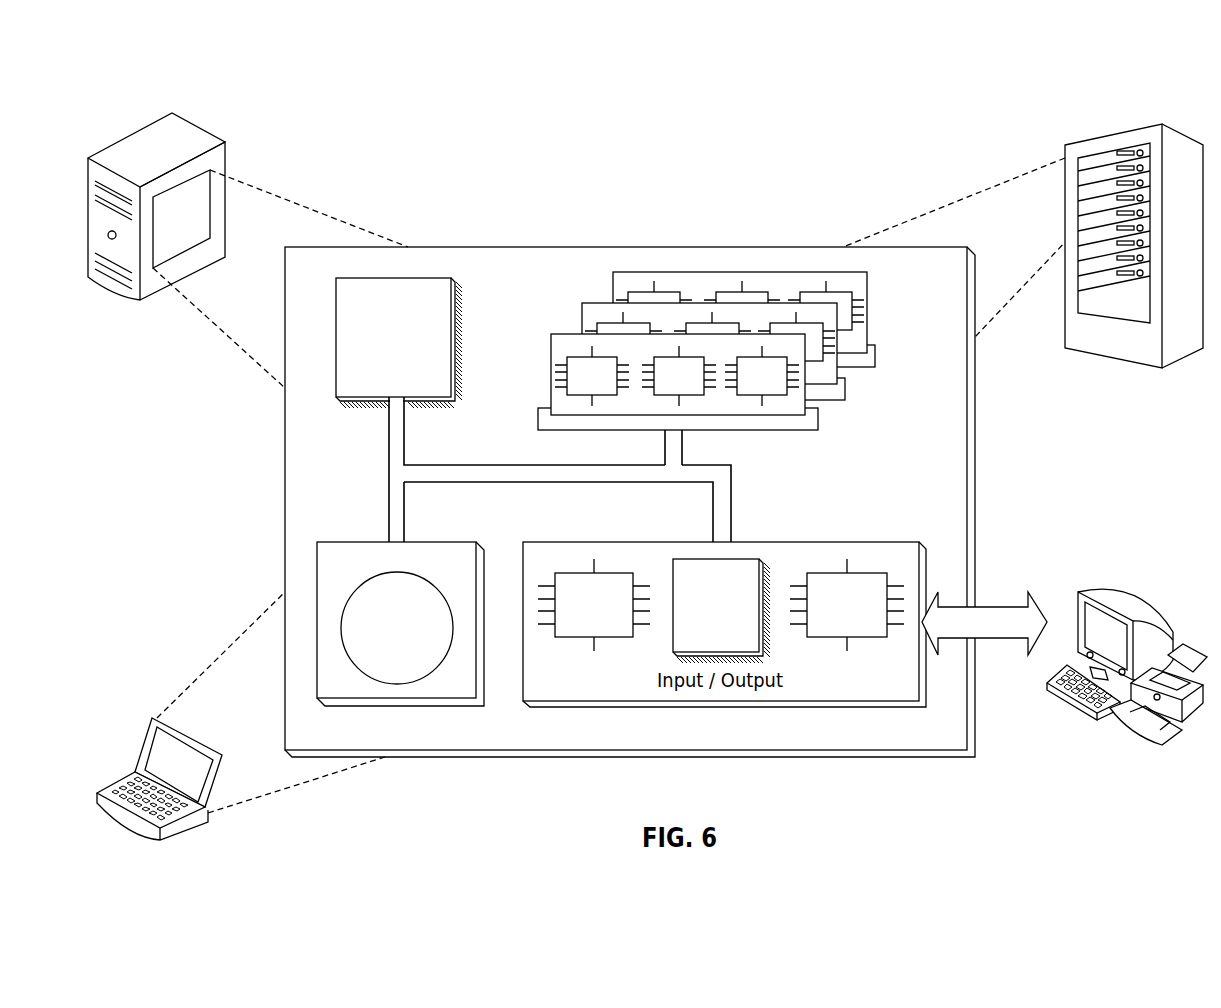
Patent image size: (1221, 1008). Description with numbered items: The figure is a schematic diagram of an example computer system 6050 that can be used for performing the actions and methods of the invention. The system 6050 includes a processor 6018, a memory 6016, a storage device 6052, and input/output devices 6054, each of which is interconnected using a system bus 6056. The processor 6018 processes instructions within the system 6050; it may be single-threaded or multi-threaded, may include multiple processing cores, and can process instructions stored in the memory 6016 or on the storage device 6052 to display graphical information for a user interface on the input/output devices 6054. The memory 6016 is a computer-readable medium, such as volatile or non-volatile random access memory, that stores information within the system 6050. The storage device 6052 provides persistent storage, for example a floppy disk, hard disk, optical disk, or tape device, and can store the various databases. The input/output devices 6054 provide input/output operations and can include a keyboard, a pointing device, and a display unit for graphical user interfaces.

The computer system 6050 is at (183, 90).
The processor 6018 is at (410, 277).
The memory 6016 is at (866, 383).
The system bus 6056 is at (553, 483).
The storage device 6052 is at (375, 542).
The input/output devices 6054 is at (1090, 590).